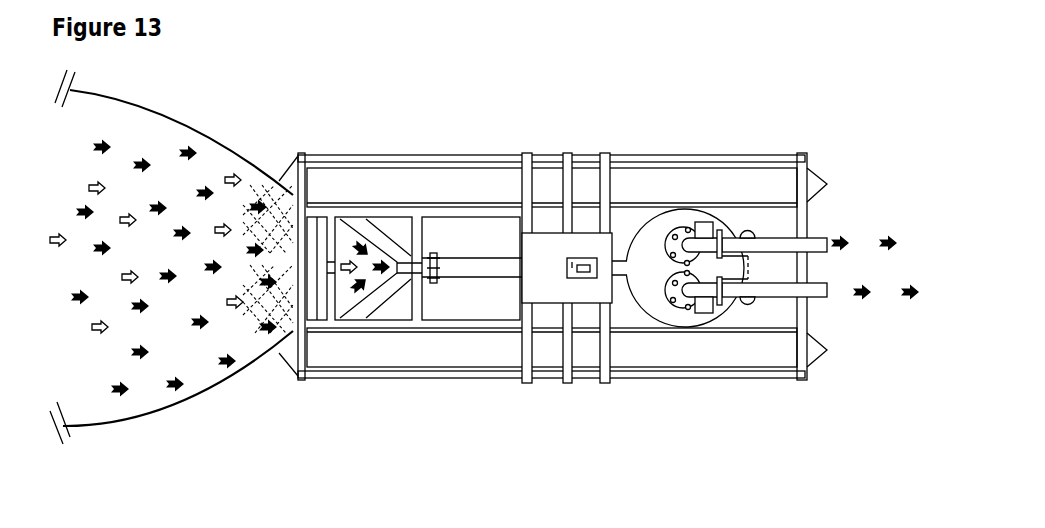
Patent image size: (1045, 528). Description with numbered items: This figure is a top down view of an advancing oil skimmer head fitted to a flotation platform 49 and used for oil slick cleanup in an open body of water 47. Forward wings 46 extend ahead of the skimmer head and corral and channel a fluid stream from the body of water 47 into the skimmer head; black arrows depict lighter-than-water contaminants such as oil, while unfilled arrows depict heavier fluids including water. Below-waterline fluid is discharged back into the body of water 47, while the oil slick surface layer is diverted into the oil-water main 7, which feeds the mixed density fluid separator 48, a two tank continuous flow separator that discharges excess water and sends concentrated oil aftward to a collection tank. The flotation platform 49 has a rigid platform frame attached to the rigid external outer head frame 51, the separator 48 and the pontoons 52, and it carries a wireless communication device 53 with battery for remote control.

The oil-water main 7 is at (485, 263).
The forward wings 46 is at (210, 112).
The body of water 47 is at (273, 438).
The mixed density fluid separator 48 is at (733, 213).
The flotation platform 49 is at (522, 122).
The rigid external outer head frame 51 is at (408, 255).
The pontoons 52 is at (657, 178).
The wireless communication device 53 is at (572, 270).